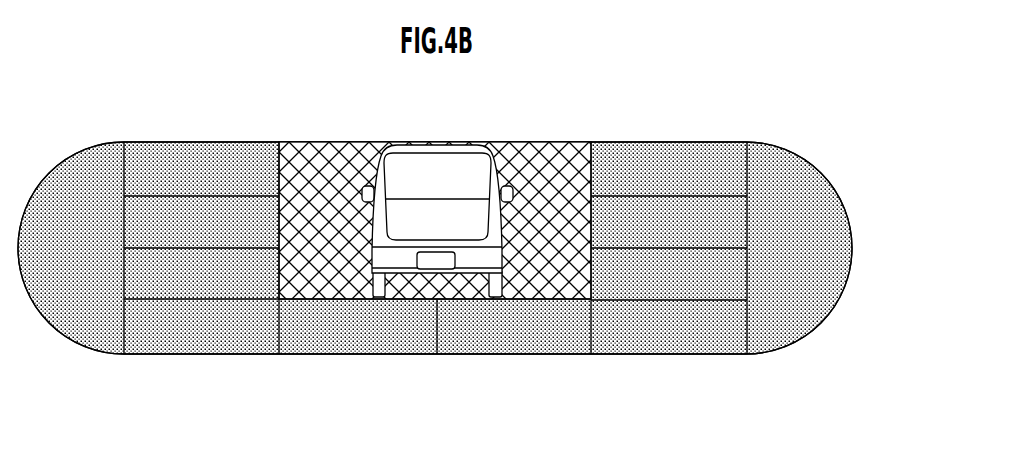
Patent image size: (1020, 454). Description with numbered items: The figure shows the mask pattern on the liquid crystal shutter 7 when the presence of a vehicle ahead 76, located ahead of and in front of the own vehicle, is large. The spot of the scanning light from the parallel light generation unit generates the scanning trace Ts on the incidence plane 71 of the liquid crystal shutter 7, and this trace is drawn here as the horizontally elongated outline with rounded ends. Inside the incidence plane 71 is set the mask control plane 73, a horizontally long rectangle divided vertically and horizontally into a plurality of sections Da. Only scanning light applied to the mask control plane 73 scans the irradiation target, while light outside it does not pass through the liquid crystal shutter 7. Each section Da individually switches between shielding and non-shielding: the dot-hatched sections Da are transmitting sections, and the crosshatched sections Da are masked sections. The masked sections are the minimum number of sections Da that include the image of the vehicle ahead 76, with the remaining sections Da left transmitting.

The liquid crystal shutter 7 is at (722, 97).
The incidence plane 71 is at (645, 142).
The mask control plane 73 is at (255, 356).
The vehicle ahead 76 is at (500, 148).
The section Da is at (257, 210).
The scanning trace Ts is at (51, 169).